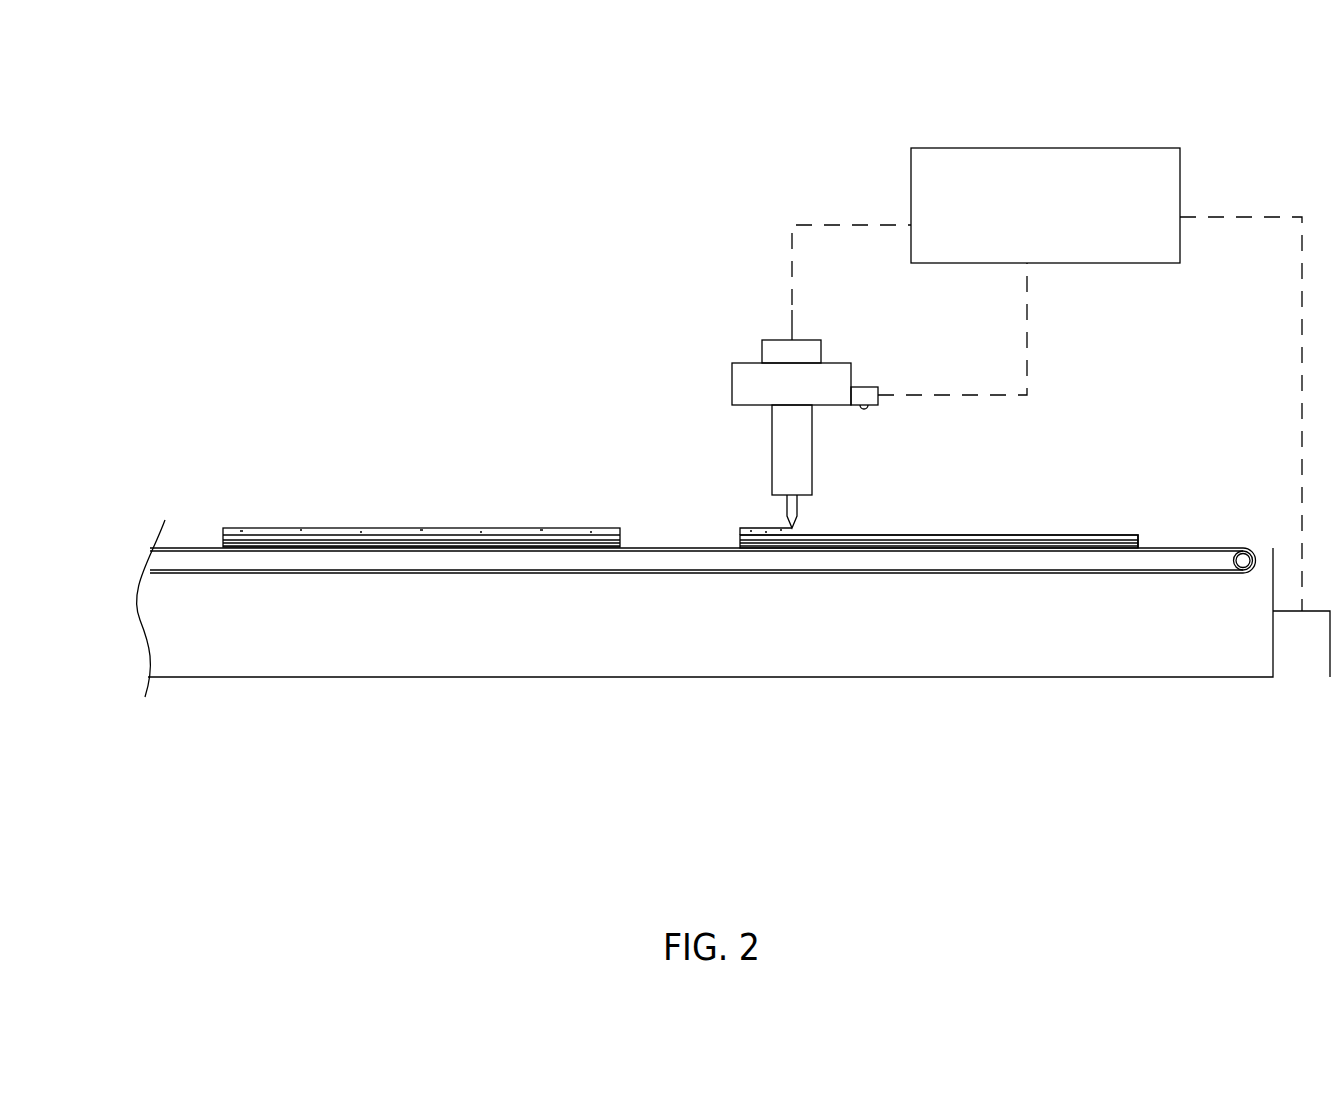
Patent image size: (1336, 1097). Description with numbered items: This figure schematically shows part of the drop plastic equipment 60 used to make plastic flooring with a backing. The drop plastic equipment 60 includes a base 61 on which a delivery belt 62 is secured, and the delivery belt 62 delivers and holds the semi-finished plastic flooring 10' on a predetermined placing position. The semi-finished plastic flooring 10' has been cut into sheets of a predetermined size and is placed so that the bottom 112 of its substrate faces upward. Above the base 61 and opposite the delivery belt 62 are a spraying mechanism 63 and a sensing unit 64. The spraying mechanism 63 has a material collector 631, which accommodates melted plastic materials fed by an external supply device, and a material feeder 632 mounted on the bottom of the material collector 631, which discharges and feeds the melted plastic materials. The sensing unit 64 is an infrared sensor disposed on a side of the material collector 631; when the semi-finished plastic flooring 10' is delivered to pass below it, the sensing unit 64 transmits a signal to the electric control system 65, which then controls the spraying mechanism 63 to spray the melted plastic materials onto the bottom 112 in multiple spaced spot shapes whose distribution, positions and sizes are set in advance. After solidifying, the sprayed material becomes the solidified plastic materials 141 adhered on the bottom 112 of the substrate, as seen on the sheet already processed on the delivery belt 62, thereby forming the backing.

The drop plastic equipment 60 is at (550, 226).
The base 61 is at (828, 646).
The delivery belt 62 is at (1207, 548).
The spraying mechanism 63 is at (736, 376).
The material collector 631 is at (742, 383).
The material feeder 632 is at (787, 517).
The sensing unit 64 is at (866, 412).
The electric control system 65 is at (1077, 165).
The semi-finished plastic flooring 10' is at (954, 488).
The bottom of the substrate 112 is at (972, 535).
The solidified plastic materials 141 is at (521, 530).